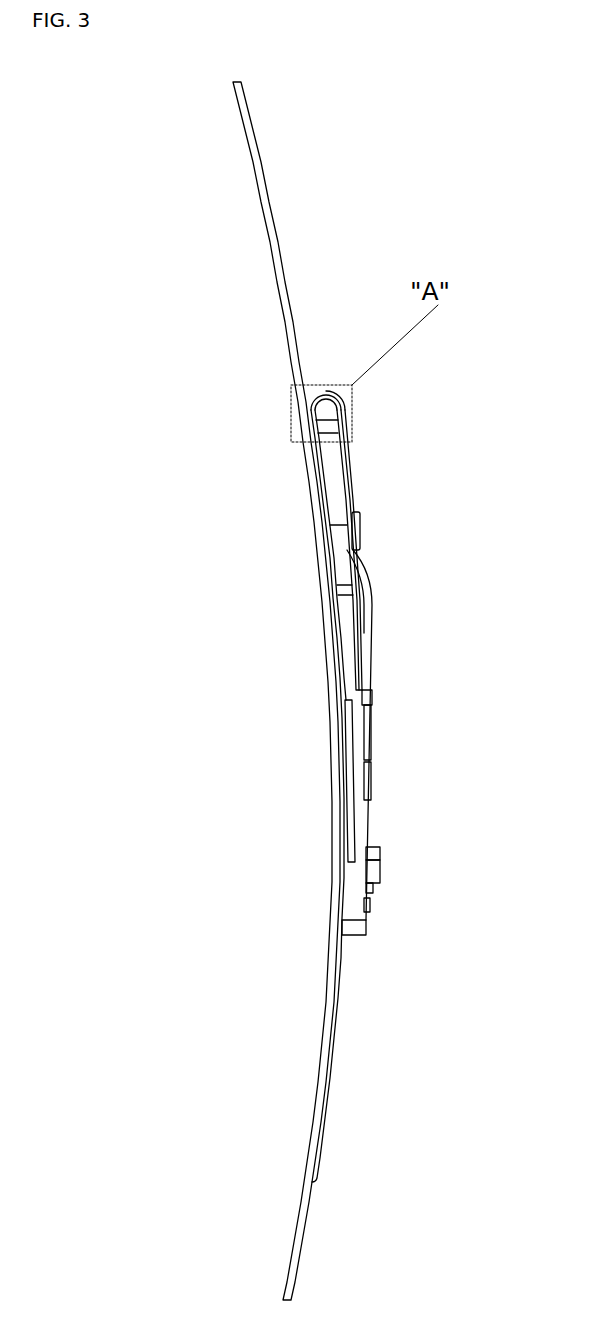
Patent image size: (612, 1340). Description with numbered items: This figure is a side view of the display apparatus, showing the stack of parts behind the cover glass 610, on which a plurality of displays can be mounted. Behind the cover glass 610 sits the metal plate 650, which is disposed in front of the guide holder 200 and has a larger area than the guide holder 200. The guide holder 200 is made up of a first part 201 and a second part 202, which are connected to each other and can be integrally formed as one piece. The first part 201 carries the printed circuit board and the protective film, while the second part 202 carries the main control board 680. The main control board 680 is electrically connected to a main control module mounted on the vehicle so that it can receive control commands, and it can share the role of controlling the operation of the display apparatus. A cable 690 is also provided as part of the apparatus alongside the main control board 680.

The cover glass 610 is at (258, 188).
The metal plate 650 is at (331, 1075).
The guide holder 200 is at (242, 626).
The first part 201 is at (333, 493).
The second part 202 is at (273, 781).
The cable 690 is at (373, 605).
The main control board 680 is at (378, 843).